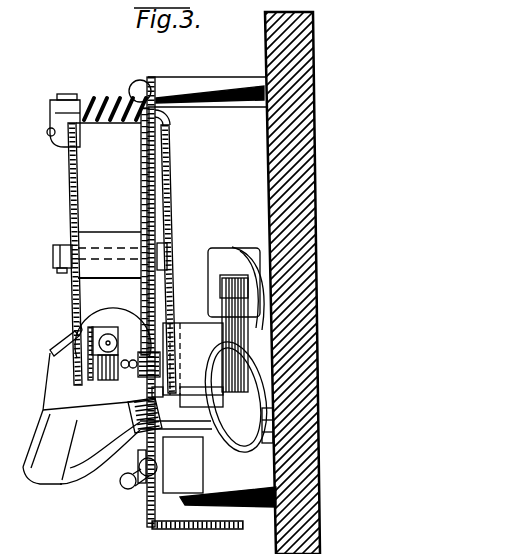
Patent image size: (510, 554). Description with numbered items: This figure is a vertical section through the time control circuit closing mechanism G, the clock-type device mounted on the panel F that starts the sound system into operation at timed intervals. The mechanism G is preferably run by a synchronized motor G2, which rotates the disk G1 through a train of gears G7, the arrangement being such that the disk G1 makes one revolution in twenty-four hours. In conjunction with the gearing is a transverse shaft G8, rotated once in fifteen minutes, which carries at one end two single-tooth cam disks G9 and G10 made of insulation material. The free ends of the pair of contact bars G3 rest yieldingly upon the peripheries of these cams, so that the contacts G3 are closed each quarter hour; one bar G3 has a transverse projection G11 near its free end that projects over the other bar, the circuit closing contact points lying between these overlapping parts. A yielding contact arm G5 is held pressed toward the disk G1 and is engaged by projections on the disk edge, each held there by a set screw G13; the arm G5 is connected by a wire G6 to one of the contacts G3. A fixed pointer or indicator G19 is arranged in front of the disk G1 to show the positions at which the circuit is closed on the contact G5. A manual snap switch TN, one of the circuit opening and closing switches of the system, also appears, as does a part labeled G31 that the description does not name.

The panel F is at (312, 66).
The time control circuit closing mechanism G is at (160, 152).
The disk G1 is at (68, 197).
The synchronized motor G2 is at (221, 249).
The contacts G3 is at (68, 366).
The yielding contact arm G5 is at (79, 86).
The wire G6 is at (168, 193).
The train of gears G7 is at (142, 216).
The transverse shaft G8 is at (108, 339).
The cam disk G9 is at (58, 126).
The cam disk G10 is at (110, 320).
The transverse projection G11 is at (51, 351).
The set screw G13 is at (50, 136).
The fixed pointer or indicator G19 is at (72, 234).
The flexible connector G31 is at (208, 423).
The manual circuit opening and closing snap switch TN is at (126, 489).